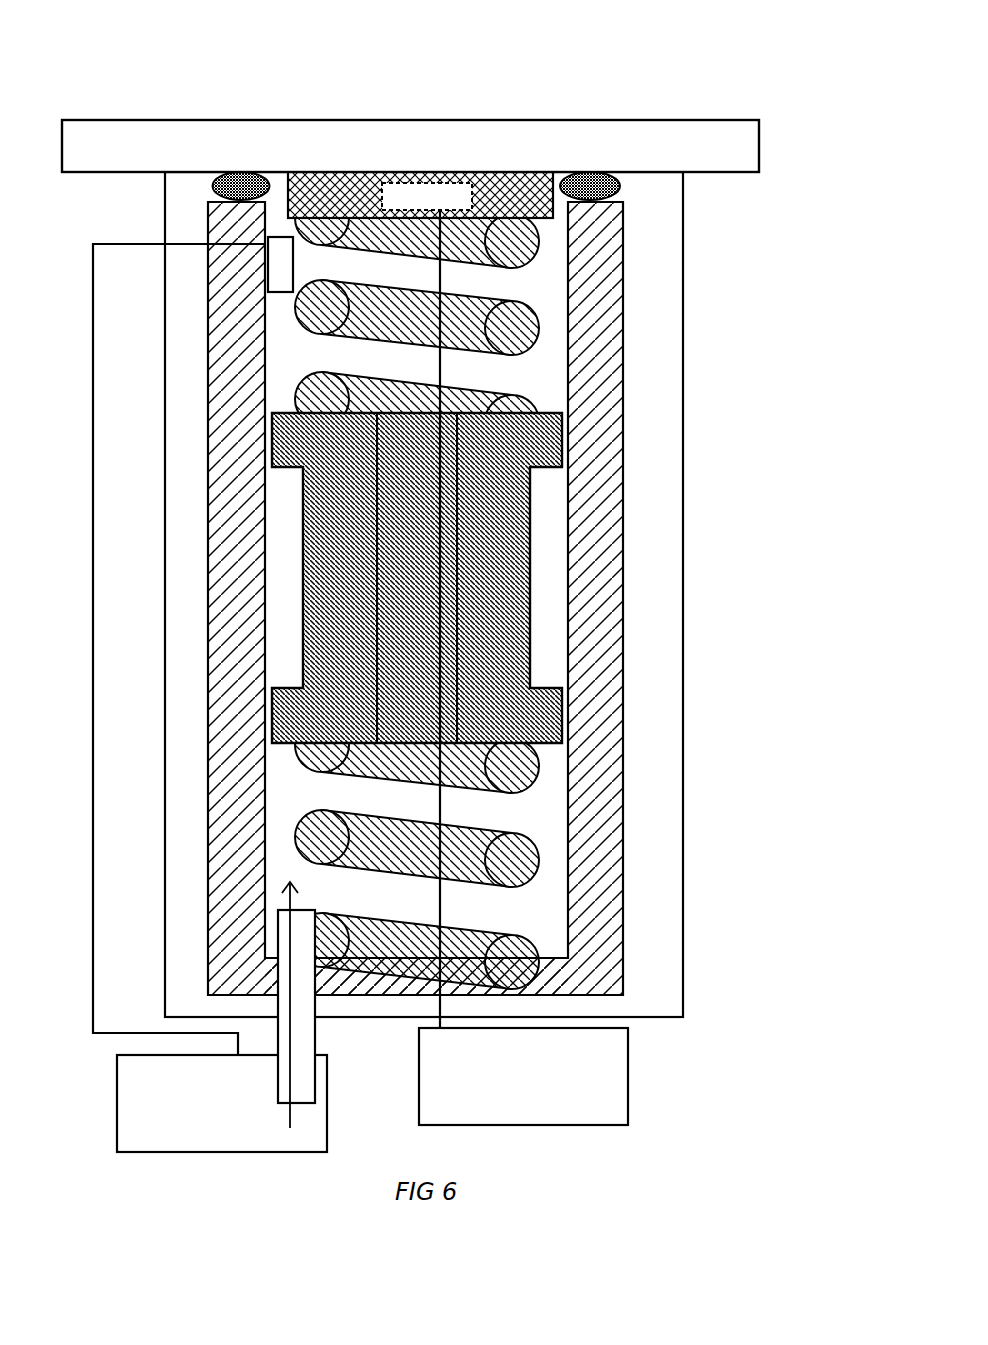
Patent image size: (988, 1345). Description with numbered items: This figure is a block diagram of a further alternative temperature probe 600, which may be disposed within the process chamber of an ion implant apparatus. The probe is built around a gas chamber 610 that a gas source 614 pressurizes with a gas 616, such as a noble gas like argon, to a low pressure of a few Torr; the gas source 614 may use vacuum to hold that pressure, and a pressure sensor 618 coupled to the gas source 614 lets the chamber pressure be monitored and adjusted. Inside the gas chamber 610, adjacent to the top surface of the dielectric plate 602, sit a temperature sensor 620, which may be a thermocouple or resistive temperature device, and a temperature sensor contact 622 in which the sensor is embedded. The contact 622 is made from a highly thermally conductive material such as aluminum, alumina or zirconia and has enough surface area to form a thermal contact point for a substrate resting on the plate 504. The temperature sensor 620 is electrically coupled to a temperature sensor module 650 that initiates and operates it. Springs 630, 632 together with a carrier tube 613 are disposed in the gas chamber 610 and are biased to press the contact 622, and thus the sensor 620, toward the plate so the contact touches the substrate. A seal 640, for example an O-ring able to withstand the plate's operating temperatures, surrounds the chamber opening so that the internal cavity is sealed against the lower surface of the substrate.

The temperature probe 600 is at (159, 56).
The substrate support plate 504 is at (170, 154).
The dielectric plate 602 is at (653, 237).
The gas chamber 610 is at (600, 778).
The carrier tube 613 is at (562, 443).
The pressure sensor 618 is at (278, 260).
The temperature sensor 620 is at (465, 178).
The temperature sensor contact 622 is at (363, 178).
The spring 630 is at (513, 858).
The spring 632 is at (510, 313).
The seal 640 is at (613, 176).
The gas source 614 is at (117, 1080).
The gas 616 is at (174, 1091).
The temperature sensor module 650 is at (523, 667).